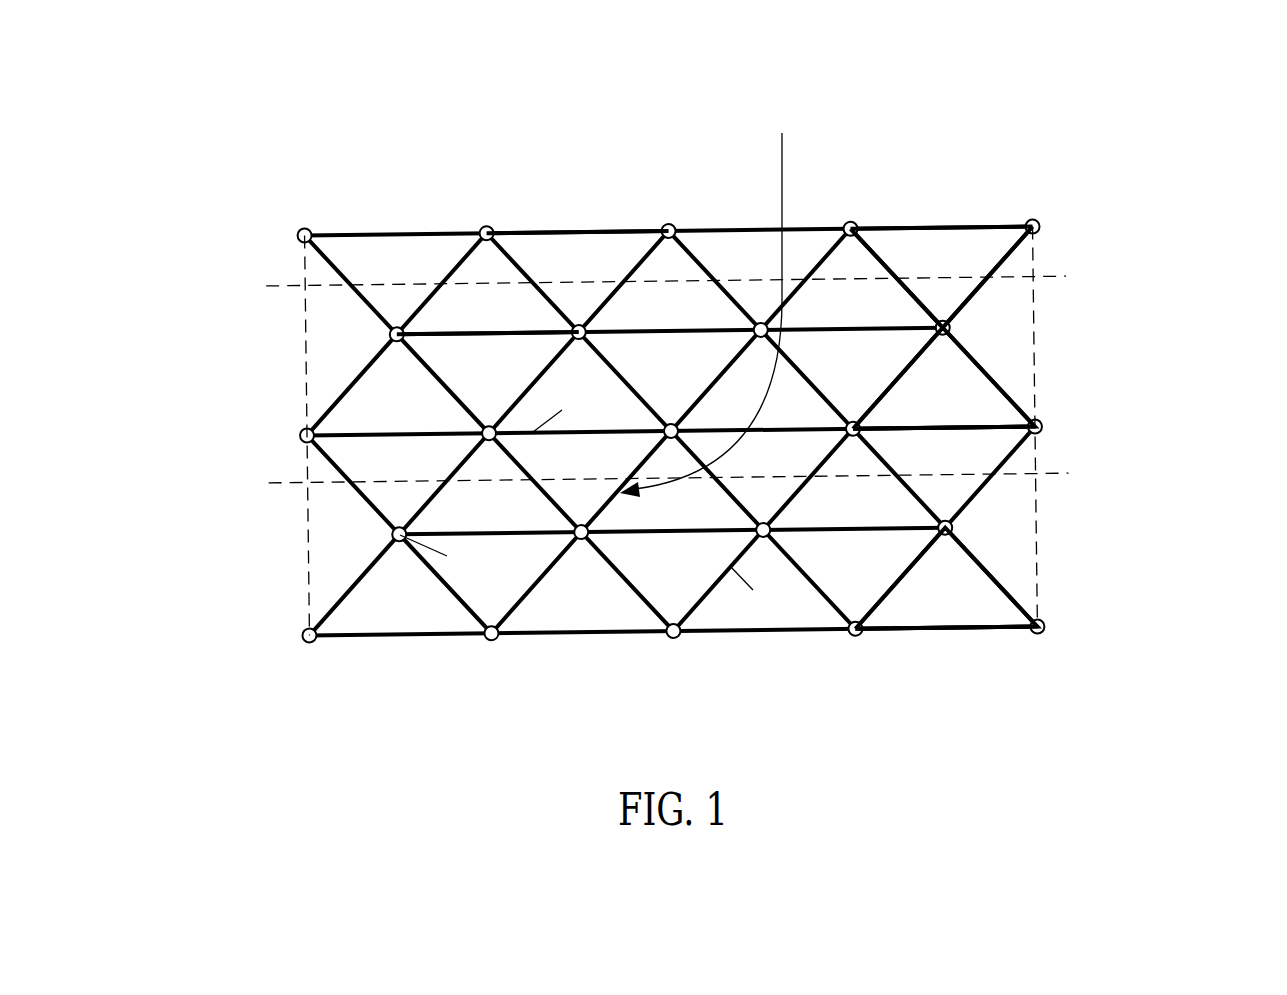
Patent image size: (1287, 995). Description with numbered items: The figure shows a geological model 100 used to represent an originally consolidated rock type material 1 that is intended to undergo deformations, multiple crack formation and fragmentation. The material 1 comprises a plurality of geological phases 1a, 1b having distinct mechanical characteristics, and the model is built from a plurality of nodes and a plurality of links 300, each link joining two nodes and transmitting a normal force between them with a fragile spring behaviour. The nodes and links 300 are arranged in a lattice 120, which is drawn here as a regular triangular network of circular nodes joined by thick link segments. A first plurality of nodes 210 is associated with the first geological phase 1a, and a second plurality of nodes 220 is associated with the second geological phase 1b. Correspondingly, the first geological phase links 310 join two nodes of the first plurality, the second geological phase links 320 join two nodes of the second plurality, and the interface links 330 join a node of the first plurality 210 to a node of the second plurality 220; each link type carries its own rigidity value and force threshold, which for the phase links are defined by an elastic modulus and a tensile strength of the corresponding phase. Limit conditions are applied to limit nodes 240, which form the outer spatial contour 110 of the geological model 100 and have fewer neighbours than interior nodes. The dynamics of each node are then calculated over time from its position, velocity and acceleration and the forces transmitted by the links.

The rock type material 1 is at (1078, 158).
The geological model 100 is at (625, 650).
The outer spatial contour 110 is at (1040, 518).
The lattice 120 is at (285, 323).
The first plurality of nodes 210 is at (485, 233).
The second plurality of nodes 220 is at (572, 335).
The limit nodes 240 is at (670, 227).
The links 300 is at (470, 332).
The first geological phase links 310 is at (888, 590).
The second geological phase links 320 is at (930, 347).
The interface links 330 is at (1005, 257).
The first geological phase 1a is at (1025, 260).
The second geological phase 1b is at (1027, 458).